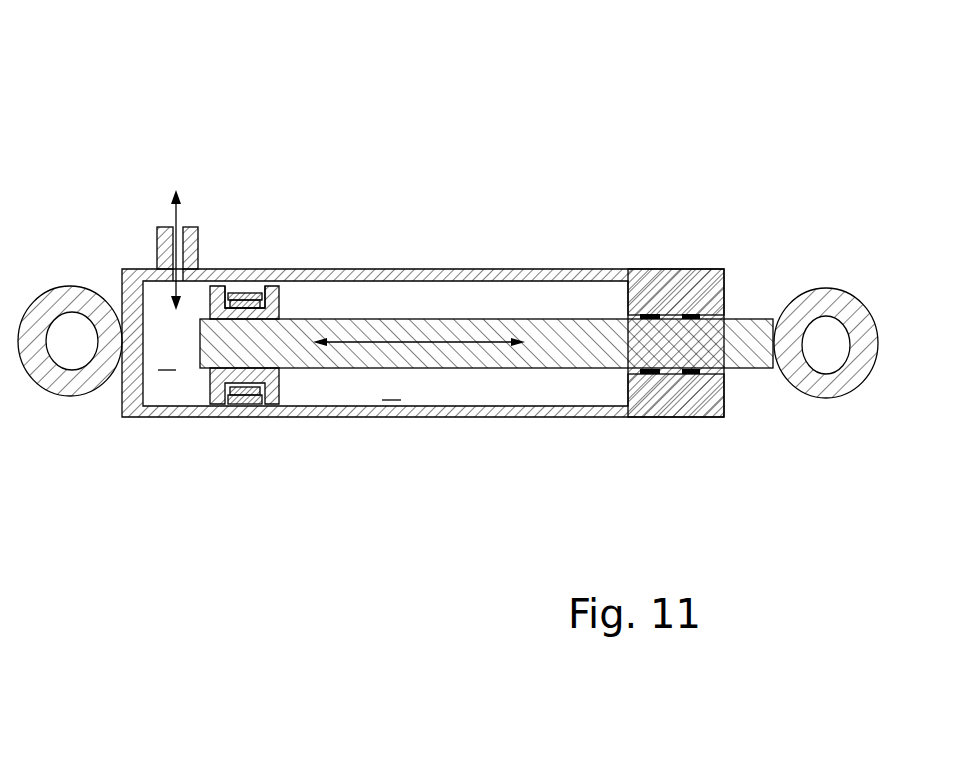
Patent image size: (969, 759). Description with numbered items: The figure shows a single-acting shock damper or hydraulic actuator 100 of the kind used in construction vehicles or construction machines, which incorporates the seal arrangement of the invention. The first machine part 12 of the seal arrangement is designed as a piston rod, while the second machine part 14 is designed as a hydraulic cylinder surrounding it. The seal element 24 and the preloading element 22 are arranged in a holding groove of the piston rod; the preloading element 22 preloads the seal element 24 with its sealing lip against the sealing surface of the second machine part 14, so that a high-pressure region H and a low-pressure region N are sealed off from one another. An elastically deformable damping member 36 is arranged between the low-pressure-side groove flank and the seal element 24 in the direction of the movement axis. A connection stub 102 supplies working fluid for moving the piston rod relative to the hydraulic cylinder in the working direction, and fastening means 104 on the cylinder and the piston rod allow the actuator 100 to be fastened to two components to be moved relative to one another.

The hydraulic actuator 100 is at (448, 263).
The connection stub 102 is at (145, 244).
The fastening means 104 is at (73, 392).
The second machine part 14 is at (443, 278).
The first machine part 12 is at (582, 353).
The seal element 24 is at (237, 283).
The preloading element 22 is at (268, 297).
The damping member 36 is at (262, 286).